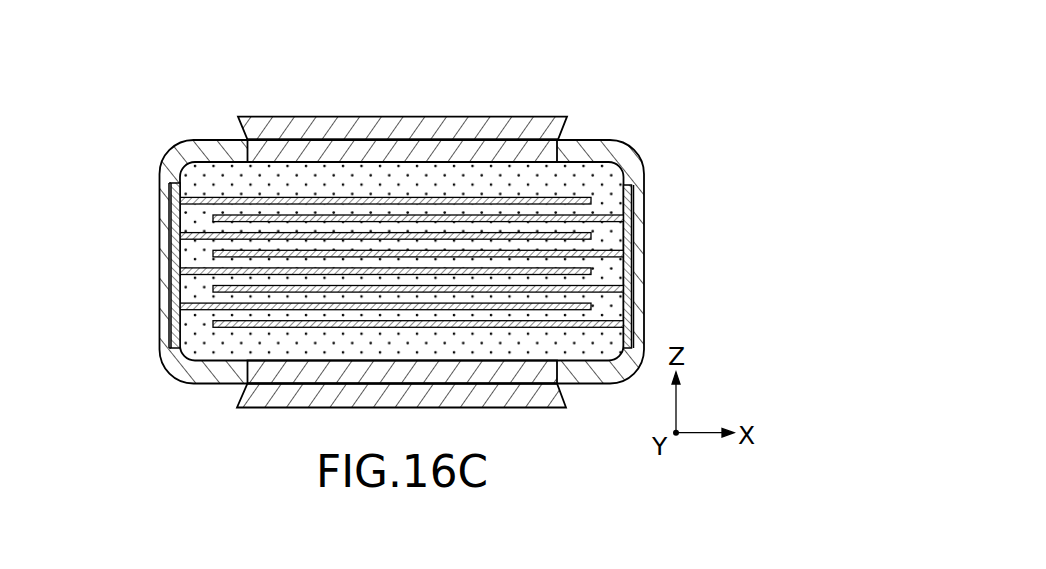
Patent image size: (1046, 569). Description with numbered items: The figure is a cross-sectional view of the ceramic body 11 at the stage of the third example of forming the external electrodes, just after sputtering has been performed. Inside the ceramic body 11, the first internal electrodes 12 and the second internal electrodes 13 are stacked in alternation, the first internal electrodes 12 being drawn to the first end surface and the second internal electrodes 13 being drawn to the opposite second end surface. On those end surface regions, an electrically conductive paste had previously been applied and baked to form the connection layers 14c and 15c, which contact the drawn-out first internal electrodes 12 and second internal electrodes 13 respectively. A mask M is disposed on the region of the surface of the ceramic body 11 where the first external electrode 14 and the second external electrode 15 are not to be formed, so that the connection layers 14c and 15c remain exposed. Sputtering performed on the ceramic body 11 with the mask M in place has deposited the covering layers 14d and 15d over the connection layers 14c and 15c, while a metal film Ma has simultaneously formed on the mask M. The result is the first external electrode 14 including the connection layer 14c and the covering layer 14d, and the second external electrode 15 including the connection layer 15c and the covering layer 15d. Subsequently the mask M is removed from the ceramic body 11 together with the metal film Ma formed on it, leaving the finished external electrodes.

The ceramic body 11 is at (602, 128).
The first internal electrodes 12 is at (171, 300).
The second internal electrodes 13 is at (633, 320).
The first external electrode 14 is at (96, 283).
The connection layer 14c is at (171, 333).
The covering layer 14d is at (170, 371).
The second external electrode 15 is at (709, 245).
The connection layer 15c is at (633, 193).
The covering layer 15d is at (636, 160).
The mask M is at (360, 150).
The metal film Ma is at (526, 142).